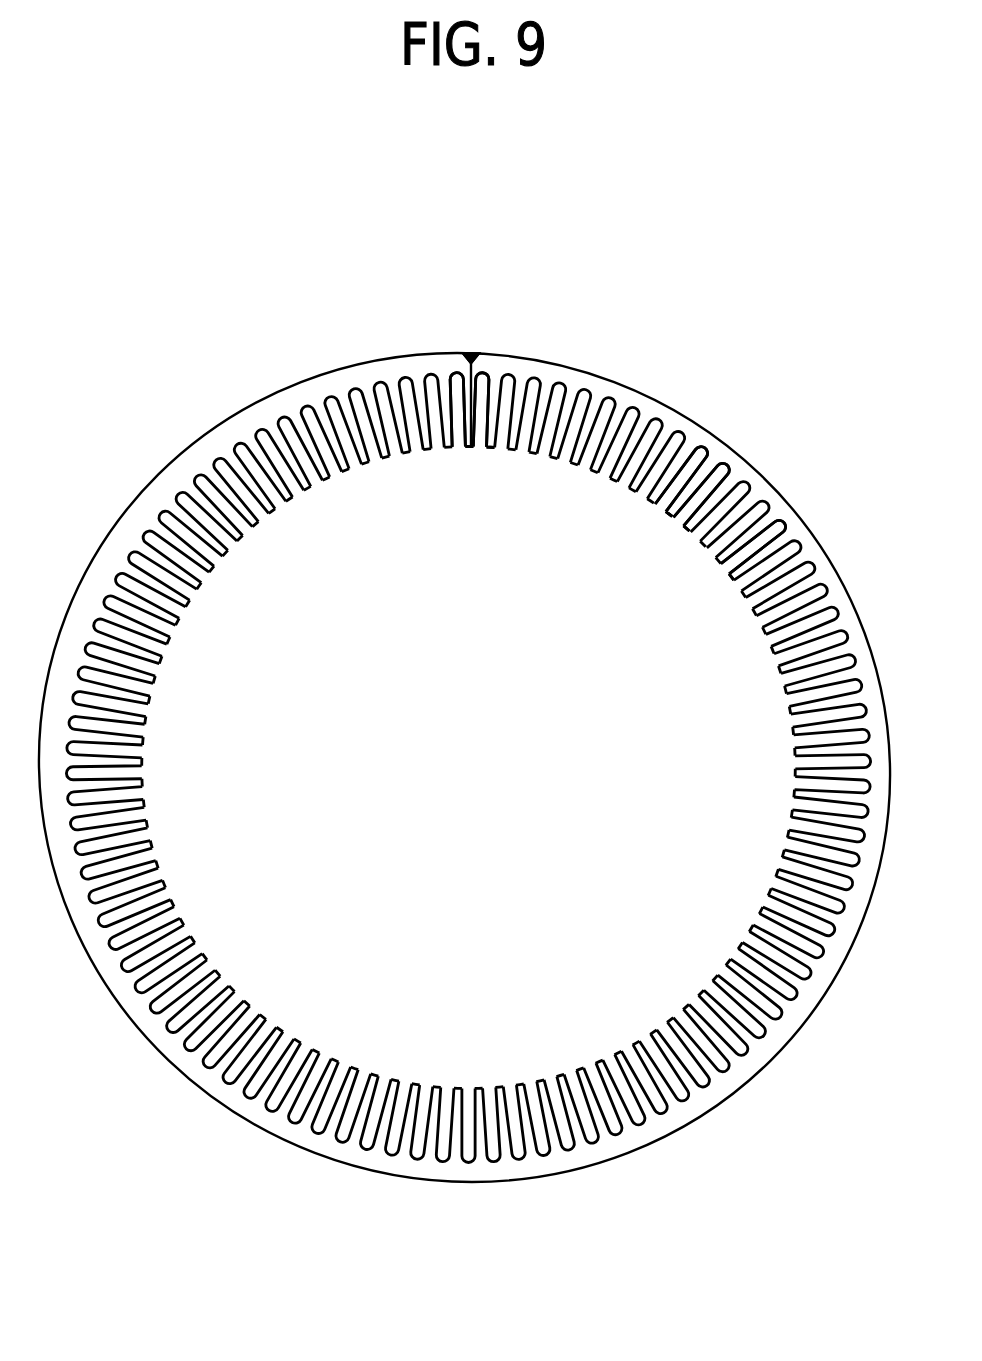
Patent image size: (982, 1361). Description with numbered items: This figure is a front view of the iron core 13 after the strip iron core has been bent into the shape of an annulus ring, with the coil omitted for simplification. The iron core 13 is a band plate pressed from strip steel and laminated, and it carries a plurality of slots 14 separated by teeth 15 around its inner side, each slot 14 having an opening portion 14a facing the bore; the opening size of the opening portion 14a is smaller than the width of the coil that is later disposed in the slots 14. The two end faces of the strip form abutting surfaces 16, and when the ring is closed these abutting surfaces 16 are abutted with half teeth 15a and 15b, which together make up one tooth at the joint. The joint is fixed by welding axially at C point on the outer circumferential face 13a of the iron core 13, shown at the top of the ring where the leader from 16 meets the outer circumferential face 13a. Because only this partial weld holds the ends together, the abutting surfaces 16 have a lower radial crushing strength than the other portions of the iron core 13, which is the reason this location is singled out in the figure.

The strip iron core 13 is at (188, 468).
The outer circumferential face 13a is at (628, 383).
The slot 14 is at (723, 468).
The opening portion 14a is at (673, 518).
The tooth 15 is at (780, 542).
The half tooth 15a is at (465, 449).
The half tooth 15b is at (474, 449).
The abutting surface 16 is at (462, 353).
The C point C is at (482, 352).